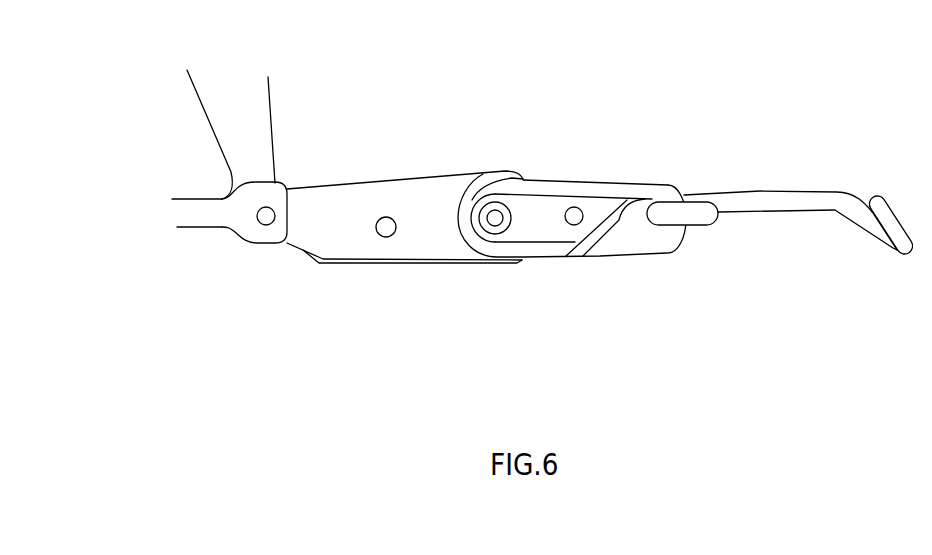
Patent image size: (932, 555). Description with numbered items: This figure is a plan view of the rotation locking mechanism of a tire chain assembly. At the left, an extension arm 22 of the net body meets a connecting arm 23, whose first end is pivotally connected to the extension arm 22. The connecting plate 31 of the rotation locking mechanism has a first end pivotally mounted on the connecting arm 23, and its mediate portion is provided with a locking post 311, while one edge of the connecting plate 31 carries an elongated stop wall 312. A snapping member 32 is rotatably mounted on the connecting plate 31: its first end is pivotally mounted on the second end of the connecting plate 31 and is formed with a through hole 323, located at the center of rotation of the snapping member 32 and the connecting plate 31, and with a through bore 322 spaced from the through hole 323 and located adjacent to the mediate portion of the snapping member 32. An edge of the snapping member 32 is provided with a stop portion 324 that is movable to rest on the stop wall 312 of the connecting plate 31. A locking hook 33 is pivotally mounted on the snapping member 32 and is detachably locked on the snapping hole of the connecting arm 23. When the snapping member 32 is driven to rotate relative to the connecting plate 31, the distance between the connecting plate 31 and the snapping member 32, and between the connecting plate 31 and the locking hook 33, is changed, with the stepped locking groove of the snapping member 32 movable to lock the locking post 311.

The extension arm 22 is at (233, 122).
The connecting arm 23 is at (203, 215).
The connecting plate 31 is at (400, 231).
The locking post 311 is at (387, 232).
The elongated stop wall 312 is at (330, 263).
The snapping member 32 is at (589, 229).
The through bore 322 is at (580, 210).
The through hole 323 is at (495, 218).
The stop portion 324 is at (632, 222).
The locking hook 33 is at (795, 205).